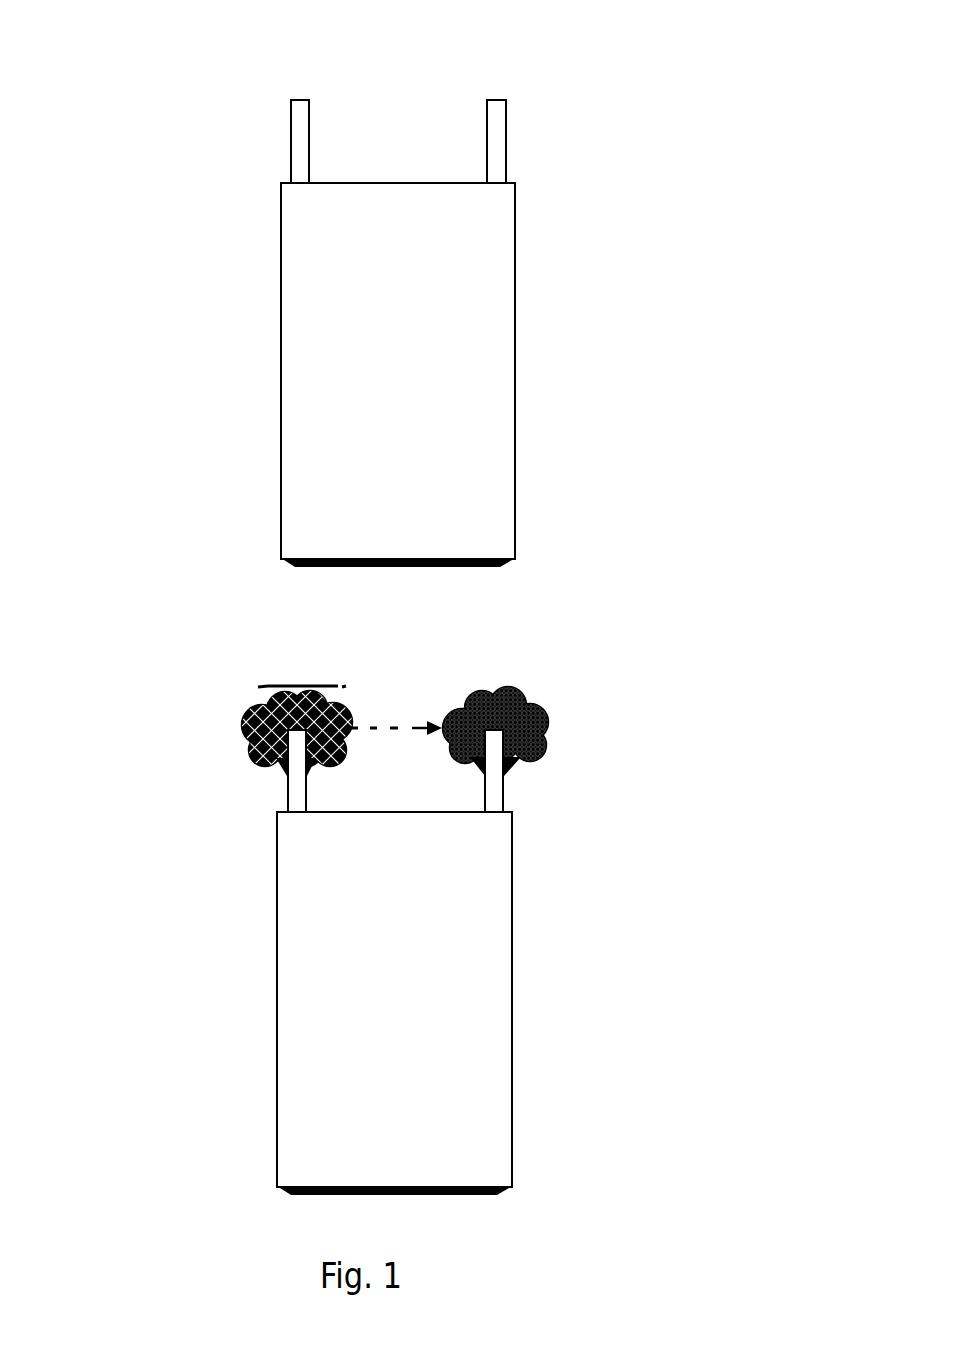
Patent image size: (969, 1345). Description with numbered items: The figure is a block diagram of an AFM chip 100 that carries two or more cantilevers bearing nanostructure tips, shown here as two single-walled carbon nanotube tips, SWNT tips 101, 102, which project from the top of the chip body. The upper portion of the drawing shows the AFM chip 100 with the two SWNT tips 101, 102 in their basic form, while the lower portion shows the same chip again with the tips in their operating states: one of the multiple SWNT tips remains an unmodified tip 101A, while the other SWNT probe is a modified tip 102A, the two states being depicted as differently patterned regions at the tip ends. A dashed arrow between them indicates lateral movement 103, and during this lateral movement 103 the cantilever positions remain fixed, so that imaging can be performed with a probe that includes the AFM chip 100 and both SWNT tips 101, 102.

The AFM chip 100 is at (396, 689).
The SWNT tip 101 is at (292, 130).
The SWNT tip 102 is at (506, 135).
The unmodified tip 101A is at (257, 760).
The modified tip 102A is at (550, 740).
The lateral movement 103 is at (391, 726).